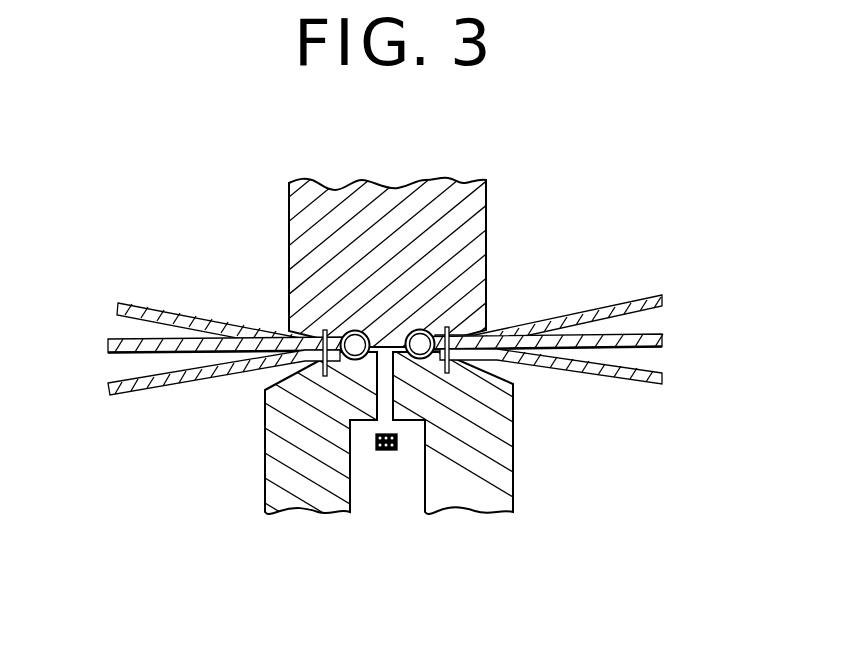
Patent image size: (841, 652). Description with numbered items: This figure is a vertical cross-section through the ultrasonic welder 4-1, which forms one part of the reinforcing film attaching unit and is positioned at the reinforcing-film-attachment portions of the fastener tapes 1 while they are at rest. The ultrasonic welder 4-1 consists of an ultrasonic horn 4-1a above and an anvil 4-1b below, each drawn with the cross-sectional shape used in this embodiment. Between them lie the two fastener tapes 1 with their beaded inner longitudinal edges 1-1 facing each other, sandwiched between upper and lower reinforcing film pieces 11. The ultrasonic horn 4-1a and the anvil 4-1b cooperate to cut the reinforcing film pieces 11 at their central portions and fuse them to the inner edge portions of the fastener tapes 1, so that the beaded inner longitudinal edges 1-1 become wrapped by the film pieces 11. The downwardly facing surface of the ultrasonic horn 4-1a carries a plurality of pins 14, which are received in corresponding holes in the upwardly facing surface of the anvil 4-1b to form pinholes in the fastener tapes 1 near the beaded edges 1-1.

The fastener tape 1 is at (118, 338).
The beaded inner longitudinal edge 1-1 is at (352, 330).
The ultrasonic welder 4-1 is at (391, 303).
The ultrasonic horn 4-1a is at (440, 200).
The anvil 4-1b is at (490, 500).
The reinforcing film piece 11 is at (387, 346).
The pin 14 is at (327, 366).